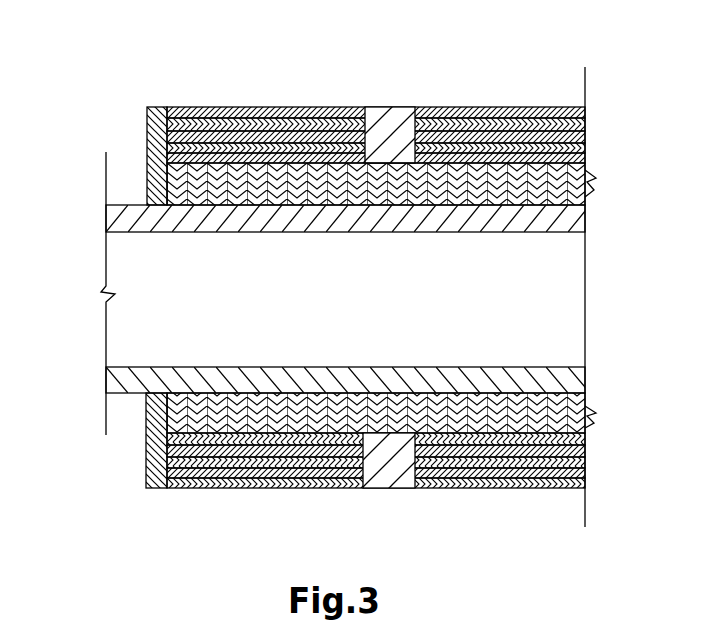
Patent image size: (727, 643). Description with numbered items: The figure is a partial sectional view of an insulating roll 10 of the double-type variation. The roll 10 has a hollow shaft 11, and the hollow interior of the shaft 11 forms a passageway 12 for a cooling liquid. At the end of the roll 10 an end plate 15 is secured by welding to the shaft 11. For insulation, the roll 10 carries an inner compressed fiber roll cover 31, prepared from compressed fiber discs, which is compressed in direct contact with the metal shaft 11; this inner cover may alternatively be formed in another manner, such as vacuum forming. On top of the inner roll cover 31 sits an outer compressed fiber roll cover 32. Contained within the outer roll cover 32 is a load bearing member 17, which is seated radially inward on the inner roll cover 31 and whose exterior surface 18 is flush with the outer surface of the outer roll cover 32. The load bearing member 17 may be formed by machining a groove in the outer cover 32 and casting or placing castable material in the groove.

The roll 10 is at (437, 95).
The shaft 11 is at (123, 393).
The passageway 12 is at (167, 287).
The end plate 15 is at (147, 112).
The load bearing member 17 is at (385, 105).
The exterior surface 18 is at (397, 488).
The inner compressed fiber roll cover 31 is at (568, 167).
The outer compressed fiber roll cover 32 is at (278, 478).